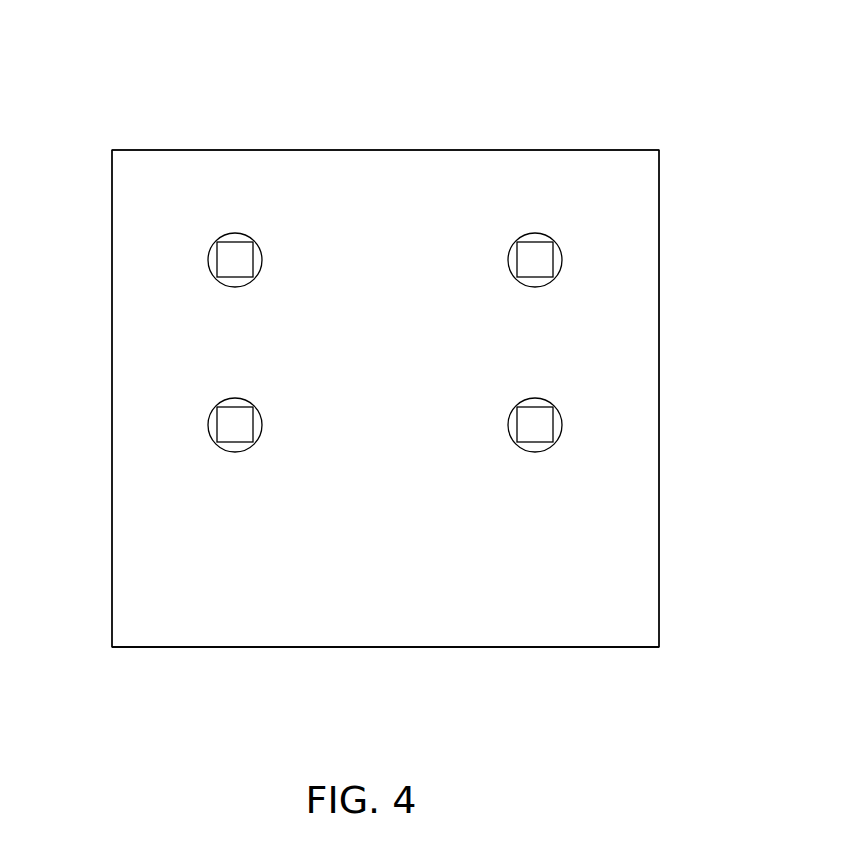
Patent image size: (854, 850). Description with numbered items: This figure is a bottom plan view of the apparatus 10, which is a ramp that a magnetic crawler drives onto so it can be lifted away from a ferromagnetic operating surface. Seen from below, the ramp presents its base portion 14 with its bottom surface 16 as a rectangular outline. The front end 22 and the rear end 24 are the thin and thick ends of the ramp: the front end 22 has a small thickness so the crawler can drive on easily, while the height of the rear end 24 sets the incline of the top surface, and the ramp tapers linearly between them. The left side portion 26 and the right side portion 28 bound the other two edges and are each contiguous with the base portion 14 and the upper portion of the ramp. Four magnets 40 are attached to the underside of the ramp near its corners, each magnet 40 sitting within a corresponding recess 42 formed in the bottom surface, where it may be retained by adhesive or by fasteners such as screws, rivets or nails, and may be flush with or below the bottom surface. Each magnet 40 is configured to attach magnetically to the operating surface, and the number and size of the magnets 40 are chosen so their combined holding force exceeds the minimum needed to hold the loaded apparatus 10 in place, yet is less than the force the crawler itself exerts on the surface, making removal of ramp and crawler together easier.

The apparatus 10 is at (178, 93).
The base portion 14 is at (423, 170).
The bottom surface 16 is at (378, 627).
The front end 22 is at (465, 647).
The rear end 24 is at (322, 150).
The left side portion 26 is at (110, 347).
The right side portion 28 is at (660, 348).
The magnet 40 is at (232, 248).
The recess 42 is at (210, 258).